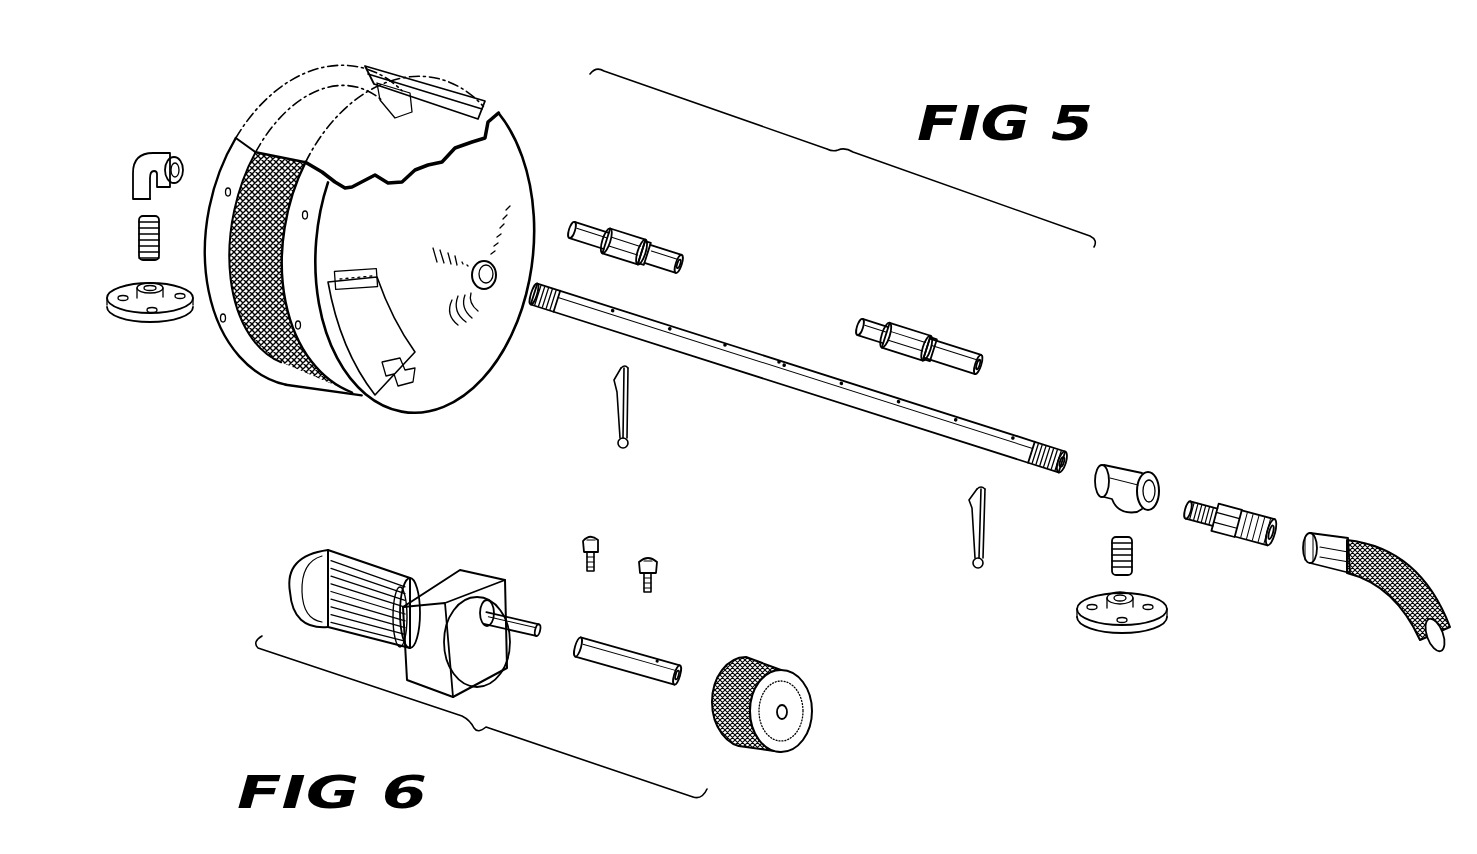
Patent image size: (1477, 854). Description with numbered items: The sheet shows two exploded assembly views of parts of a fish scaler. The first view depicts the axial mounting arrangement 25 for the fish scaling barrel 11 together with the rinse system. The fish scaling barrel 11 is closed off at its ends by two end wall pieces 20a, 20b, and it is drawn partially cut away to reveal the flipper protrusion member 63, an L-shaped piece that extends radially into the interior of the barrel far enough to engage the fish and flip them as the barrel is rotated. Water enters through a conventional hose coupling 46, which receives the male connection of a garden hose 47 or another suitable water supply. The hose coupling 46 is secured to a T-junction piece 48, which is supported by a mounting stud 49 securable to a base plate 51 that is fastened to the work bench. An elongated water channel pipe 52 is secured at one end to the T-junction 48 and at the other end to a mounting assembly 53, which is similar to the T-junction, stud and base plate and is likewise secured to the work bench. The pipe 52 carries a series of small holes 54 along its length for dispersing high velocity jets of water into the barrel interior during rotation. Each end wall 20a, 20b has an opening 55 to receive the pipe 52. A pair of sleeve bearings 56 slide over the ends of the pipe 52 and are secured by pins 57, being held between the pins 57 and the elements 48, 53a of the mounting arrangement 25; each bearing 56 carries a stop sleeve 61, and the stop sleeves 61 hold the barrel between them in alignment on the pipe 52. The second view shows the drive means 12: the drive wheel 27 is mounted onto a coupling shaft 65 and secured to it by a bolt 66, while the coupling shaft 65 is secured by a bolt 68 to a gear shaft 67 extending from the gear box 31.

In FIG. 5, the fish scaling barrel 11 is at (272, 398).
In FIG. 6, the drive means 12 is at (561, 553).
In FIG. 5, the end wall 20a is at (508, 168).
In FIG. 5, the end wall 20b is at (243, 160).
In FIG. 5, the axial mounting arrangement 25 is at (798, 234).
In FIG. 6, the drive wheel 27 is at (813, 694).
In FIG. 6, the gear box 31 is at (477, 585).
In FIG. 5, the hose coupling 46 is at (1250, 490).
In FIG. 5, the garden hose 47 is at (1333, 576).
In FIG. 5, the T-junction piece 48 is at (1150, 482).
In FIG. 5, the mounting stud 49 is at (1112, 562).
In FIG. 5, the base plate 51 is at (1088, 625).
In FIG. 5, the elongated water channel pipe 52 is at (841, 404).
In FIG. 5, the mounting assembly 53 is at (110, 293).
In FIG. 5, the element of mounting assembly 53a is at (140, 164).
In FIG. 5, the small holes 54 is at (779, 360).
In FIG. 5, the opening 55 is at (500, 285).
In FIG. 5, the sleeve bearing 56 is at (608, 224).
In FIG. 5, the pin 57 is at (628, 443).
In FIG. 5, the stop sleeve 61 is at (658, 211).
In FIG. 5, the flipper protrusion member 63 is at (485, 107).
In FIG. 6, the coupling shaft 65 is at (602, 660).
In FIG. 6, the bolt 66 is at (657, 566).
In FIG. 6, the gear shaft 67 is at (518, 634).
In FIG. 6, the bolt 68 is at (599, 551).